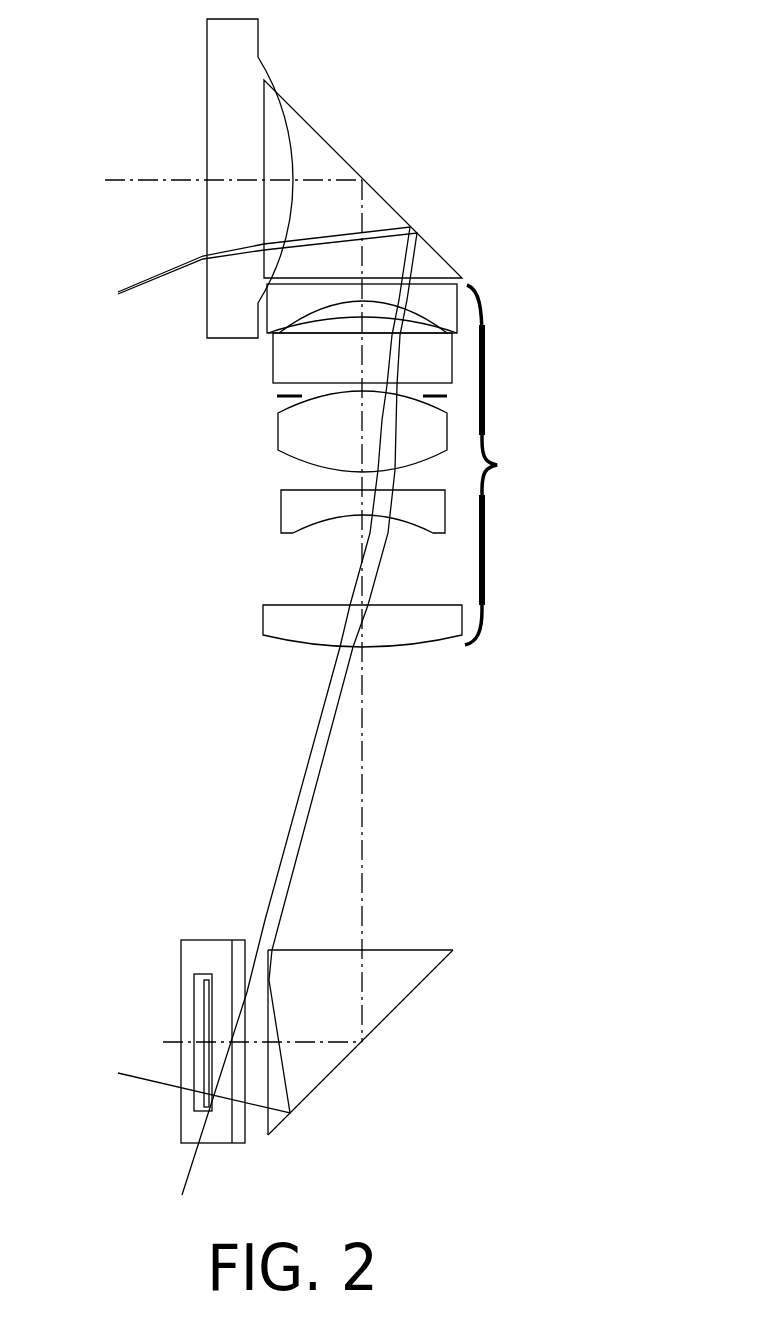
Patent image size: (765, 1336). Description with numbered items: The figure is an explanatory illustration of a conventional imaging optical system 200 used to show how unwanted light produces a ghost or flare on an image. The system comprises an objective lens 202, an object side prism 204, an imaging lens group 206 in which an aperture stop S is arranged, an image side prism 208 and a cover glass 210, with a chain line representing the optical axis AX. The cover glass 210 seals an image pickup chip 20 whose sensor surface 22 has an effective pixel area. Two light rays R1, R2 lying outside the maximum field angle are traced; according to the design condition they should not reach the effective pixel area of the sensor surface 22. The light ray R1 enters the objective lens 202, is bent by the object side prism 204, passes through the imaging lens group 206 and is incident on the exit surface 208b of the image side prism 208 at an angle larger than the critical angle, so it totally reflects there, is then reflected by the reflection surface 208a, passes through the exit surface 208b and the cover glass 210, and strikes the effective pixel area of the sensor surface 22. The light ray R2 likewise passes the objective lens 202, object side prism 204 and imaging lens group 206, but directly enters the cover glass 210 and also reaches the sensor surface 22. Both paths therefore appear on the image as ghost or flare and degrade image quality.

The conventional imaging optical system 200 is at (223, 512).
The objective lens 202 is at (212, 50).
The object side prism 204 is at (428, 253).
The imaging lens group 206 is at (487, 387).
The aperture stop S is at (280, 397).
The optical axis AX is at (362, 700).
The light ray R1 is at (323, 762).
The light ray R2 is at (298, 793).
The image side prism 208 is at (372, 1060).
The reflection surface 208a is at (440, 955).
The exit surface 208b is at (267, 1082).
The cover glass 210 is at (200, 1080).
The image pickup chip 20 is at (196, 1108).
The sensor surface 22 is at (205, 1050).